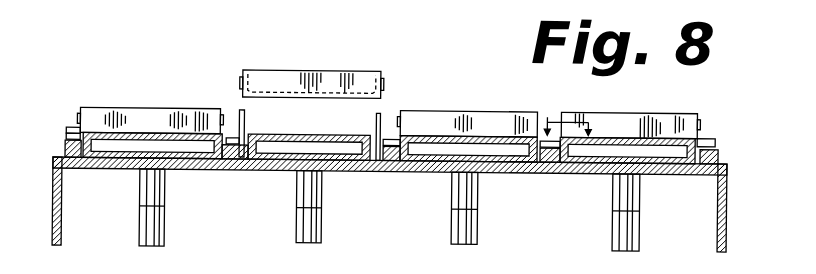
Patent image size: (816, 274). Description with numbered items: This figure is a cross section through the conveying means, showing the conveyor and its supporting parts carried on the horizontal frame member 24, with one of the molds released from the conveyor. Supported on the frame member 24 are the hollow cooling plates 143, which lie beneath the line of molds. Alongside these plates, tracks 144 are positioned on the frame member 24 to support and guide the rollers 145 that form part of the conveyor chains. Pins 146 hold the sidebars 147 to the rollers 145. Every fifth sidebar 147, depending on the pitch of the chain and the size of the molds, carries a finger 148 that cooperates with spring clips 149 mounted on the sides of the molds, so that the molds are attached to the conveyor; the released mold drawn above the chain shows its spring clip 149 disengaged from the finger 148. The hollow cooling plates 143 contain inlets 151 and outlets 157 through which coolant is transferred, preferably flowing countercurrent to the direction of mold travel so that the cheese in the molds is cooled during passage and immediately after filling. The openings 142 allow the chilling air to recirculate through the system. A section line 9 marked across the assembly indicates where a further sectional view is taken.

The section line 9- 9 is at (573, 120).
The horizontal frame member 24 is at (730, 203).
The openings 142 is at (401, 165).
The hollow cooling plates 143 is at (311, 131).
The tracks 144 is at (58, 152).
The rollers 145 is at (70, 132).
The pins 146 is at (66, 140).
The sidebars 147 is at (68, 133).
The finger 148 is at (240, 105).
The spring clips 149 is at (381, 79).
The inlets 151 is at (305, 180).
The outlets 157 is at (322, 222).